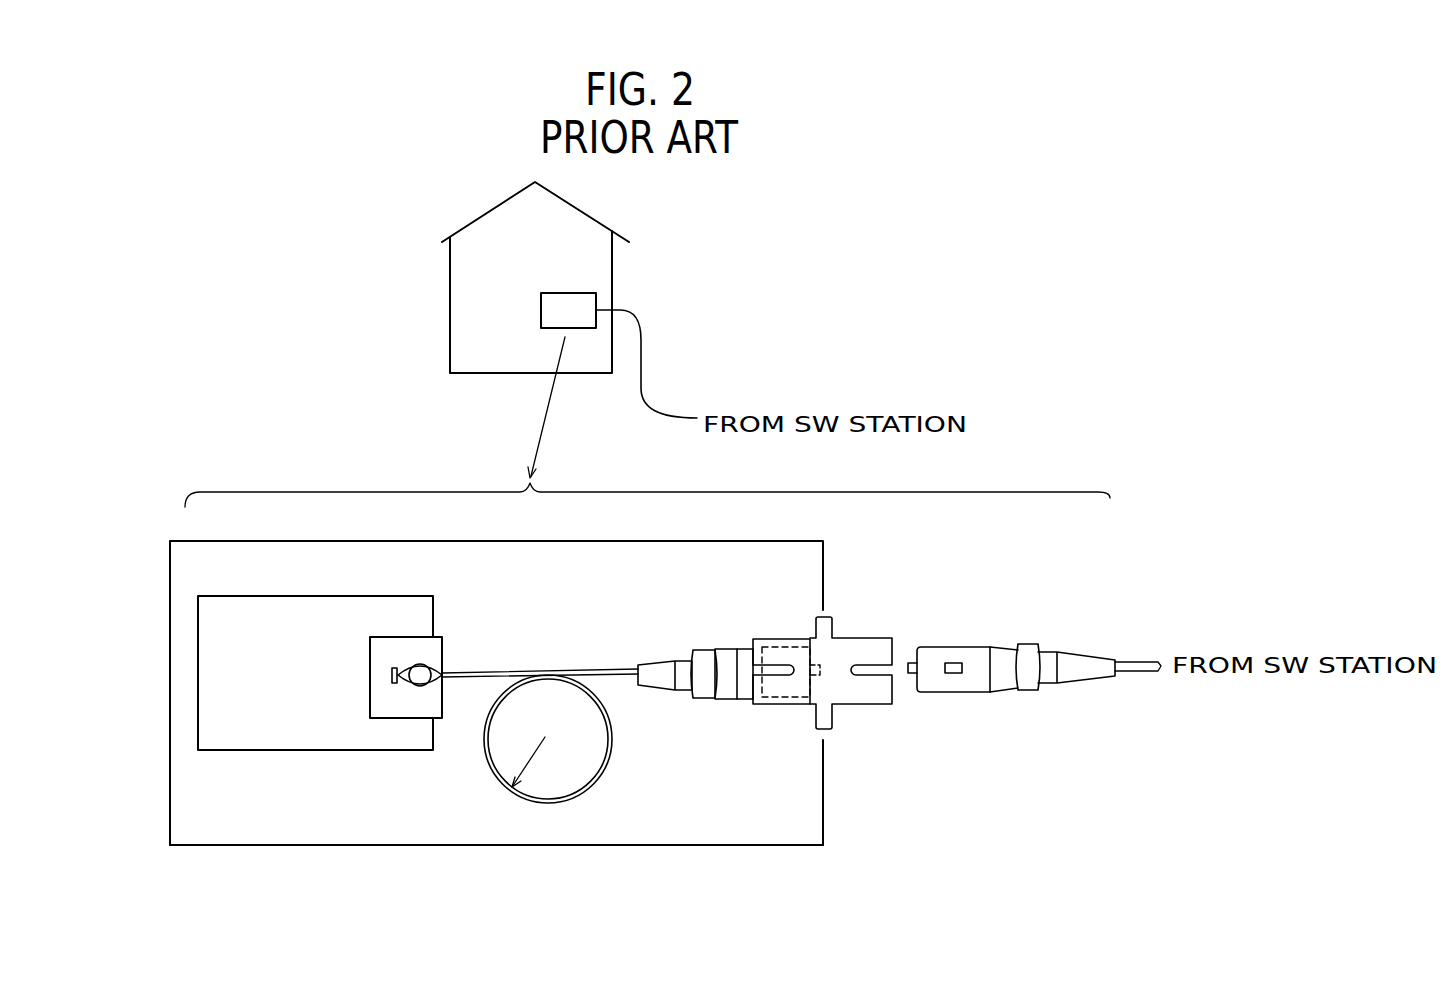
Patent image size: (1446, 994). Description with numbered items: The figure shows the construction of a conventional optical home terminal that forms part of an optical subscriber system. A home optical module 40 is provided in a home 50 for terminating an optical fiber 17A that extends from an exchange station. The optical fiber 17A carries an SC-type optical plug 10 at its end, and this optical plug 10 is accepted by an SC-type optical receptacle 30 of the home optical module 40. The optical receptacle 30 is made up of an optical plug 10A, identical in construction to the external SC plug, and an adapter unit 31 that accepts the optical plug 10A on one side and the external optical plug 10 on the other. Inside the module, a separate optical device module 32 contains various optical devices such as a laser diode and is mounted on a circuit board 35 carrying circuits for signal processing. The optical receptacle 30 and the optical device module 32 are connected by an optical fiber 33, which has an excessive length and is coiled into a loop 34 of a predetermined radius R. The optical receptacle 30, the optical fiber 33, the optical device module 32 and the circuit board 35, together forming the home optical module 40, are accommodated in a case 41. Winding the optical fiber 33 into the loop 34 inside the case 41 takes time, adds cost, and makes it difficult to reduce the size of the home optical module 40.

The home 50 is at (612, 213).
The home optical module 40 is at (568, 292).
The optical fiber 17A is at (640, 367).
The case 41 is at (169, 813).
The circuit board 35 is at (285, 746).
The optical device module 32 is at (409, 635).
The optical fiber 33 is at (593, 669).
The loop 34 is at (484, 772).
The optical plug 10A is at (738, 644).
The adapter unit 31 is at (808, 707).
The optical receptacle 30 is at (852, 612).
The optical plug 10 is at (977, 698).